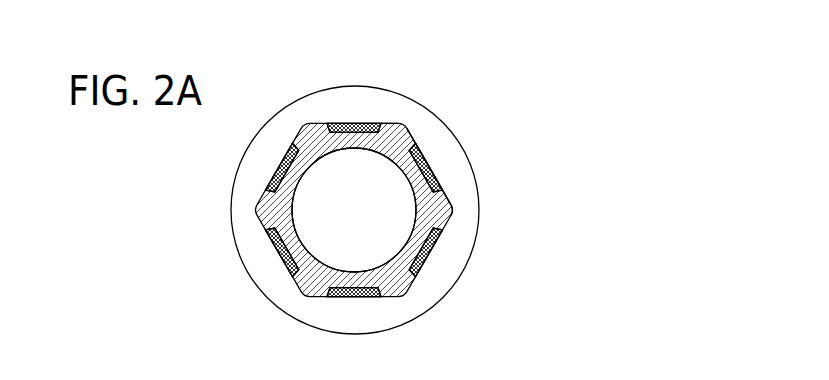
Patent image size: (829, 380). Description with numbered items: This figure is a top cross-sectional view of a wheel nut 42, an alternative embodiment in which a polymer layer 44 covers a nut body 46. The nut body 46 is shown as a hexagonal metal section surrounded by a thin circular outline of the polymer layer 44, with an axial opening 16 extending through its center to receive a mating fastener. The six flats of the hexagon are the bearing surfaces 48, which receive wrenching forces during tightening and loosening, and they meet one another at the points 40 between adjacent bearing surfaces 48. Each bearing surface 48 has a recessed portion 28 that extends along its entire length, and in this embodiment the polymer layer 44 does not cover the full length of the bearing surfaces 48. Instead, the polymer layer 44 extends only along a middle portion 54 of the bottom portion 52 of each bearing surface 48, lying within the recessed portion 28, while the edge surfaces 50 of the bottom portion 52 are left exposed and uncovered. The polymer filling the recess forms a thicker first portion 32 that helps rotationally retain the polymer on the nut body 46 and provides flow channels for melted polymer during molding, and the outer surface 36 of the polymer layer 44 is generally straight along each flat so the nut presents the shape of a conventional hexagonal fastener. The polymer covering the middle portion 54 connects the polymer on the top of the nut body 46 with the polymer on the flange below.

The axial opening 16 is at (378, 223).
The recessed portion 28 is at (346, 148).
The thicker first portion 32 is at (425, 146).
The outer surface 36 is at (362, 121).
The points 40 is at (454, 211).
The wheel nut 42 is at (449, 100).
The polymer layer 44 is at (423, 266).
The nut body 46 is at (435, 203).
The bearing surfaces 48 is at (416, 182).
The edge surfaces 50 is at (262, 191).
The bottom portion 52 is at (388, 122).
The middle portion 54 is at (358, 287).